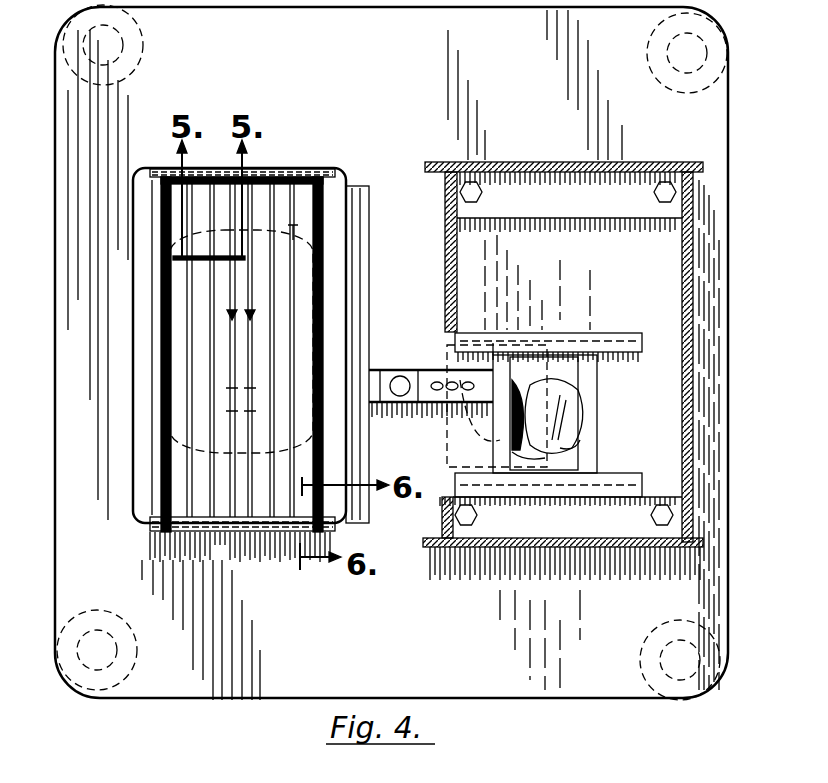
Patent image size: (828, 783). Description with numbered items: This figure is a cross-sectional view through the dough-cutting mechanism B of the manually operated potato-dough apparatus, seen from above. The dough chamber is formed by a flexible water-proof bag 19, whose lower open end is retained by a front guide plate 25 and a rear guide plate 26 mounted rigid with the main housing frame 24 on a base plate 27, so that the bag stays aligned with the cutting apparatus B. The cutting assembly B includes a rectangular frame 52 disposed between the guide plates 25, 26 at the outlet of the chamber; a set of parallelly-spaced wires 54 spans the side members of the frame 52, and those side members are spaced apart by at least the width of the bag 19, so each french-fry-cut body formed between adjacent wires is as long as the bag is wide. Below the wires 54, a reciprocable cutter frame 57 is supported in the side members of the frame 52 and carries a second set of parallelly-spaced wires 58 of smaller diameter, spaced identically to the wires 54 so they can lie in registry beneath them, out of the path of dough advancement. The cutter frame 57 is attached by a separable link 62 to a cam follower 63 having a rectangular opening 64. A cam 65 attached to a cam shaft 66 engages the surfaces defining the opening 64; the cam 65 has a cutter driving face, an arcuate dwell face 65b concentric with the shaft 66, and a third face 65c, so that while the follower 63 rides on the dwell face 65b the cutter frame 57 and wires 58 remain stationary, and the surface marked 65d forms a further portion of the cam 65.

The flexible water-proof bag 19 is at (275, 232).
The main housing frame 24 is at (536, 164).
The front guide plate 25 is at (160, 176).
The rear guide plate 26 is at (322, 180).
The base plate 27 is at (722, 152).
The rectangular frame 52 is at (225, 533).
The parallelly-spaced wires 54 is at (249, 321).
The reciprocable cutter frame 57 is at (366, 191).
The second set of parallelly-spaced wires 58 is at (249, 390).
The separable link 62 is at (420, 372).
The cam follower 63 is at (597, 372).
The rectangular opening 64 is at (544, 413).
The cam 65 is at (572, 408).
The dwell face 65b is at (578, 444).
The third face 65c is at (557, 355).
The lever portion 65d is at (531, 460).
The cam shaft 66 is at (523, 394).
The dough-cutting mechanism B is at (300, 149).